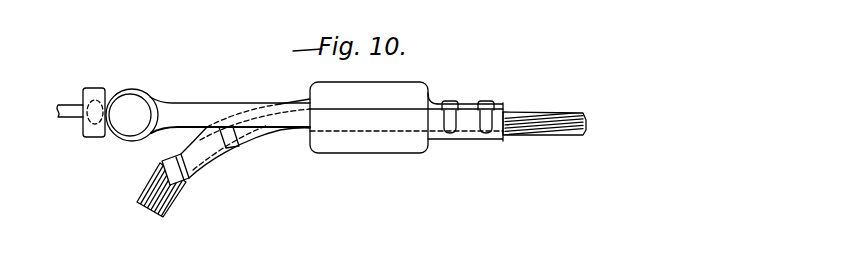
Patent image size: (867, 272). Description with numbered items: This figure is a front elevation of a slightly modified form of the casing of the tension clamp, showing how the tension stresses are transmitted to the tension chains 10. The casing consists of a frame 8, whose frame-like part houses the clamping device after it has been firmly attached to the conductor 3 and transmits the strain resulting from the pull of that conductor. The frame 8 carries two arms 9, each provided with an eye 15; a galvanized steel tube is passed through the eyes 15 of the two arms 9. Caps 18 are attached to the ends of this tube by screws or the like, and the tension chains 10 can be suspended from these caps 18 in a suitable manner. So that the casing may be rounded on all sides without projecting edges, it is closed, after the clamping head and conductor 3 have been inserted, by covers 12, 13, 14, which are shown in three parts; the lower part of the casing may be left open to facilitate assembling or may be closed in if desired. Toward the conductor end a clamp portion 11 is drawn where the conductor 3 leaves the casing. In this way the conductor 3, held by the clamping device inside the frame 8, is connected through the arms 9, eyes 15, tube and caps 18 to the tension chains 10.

The conductor 3 is at (166, 200).
The frame 8 is at (382, 131).
The arms 9 is at (223, 108).
The tension chains 10 is at (71, 118).
The clamp 11 is at (472, 139).
The cover 12 is at (463, 105).
The cover 13 is at (388, 93).
The cover 14 is at (161, 160).
The eyes 15 is at (126, 89).
The caps 18 is at (139, 106).